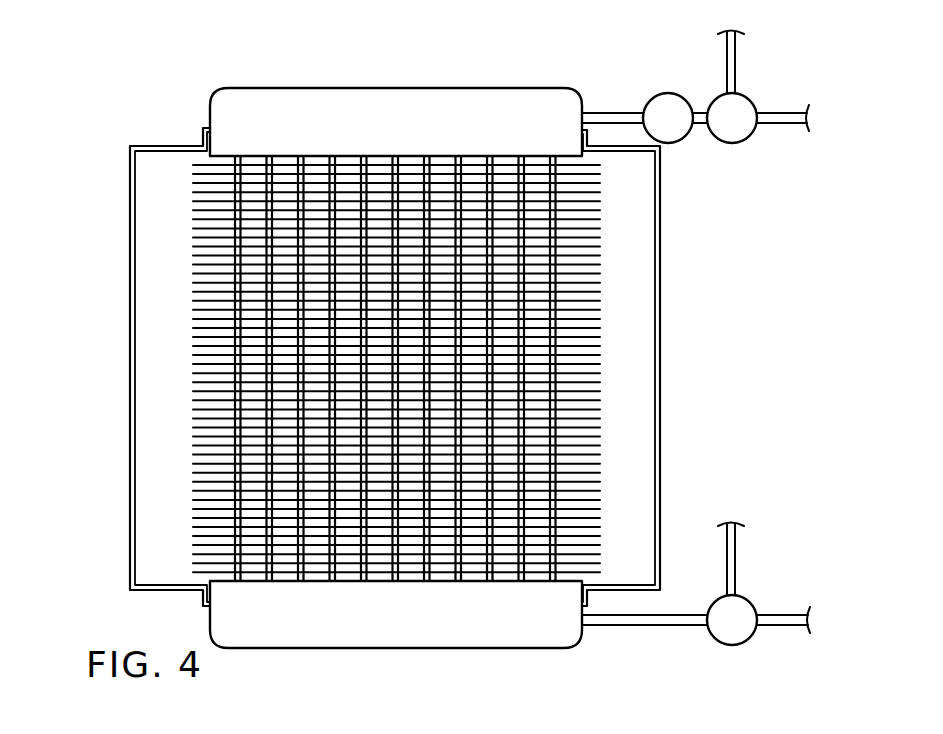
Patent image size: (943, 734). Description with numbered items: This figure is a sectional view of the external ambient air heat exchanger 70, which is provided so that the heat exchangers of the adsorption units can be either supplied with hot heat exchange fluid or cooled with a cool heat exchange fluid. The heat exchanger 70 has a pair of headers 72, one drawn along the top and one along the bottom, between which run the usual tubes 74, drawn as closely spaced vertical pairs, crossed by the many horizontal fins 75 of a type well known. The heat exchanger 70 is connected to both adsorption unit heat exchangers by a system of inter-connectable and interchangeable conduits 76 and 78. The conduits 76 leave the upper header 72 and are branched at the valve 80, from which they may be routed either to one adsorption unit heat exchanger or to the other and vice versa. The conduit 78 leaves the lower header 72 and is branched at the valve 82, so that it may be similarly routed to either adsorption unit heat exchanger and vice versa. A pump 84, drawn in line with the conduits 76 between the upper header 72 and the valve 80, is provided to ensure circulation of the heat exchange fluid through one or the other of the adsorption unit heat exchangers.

The external ambient air heat exchanger 70 is at (100, 213).
The headers 72 is at (345, 118).
The tubes 74 is at (518, 320).
The fins 75 is at (598, 380).
The conduits 76 is at (775, 112).
The conduit 78 is at (778, 613).
The valve 80 is at (735, 126).
The valve 82 is at (737, 630).
The pump 84 is at (668, 93).